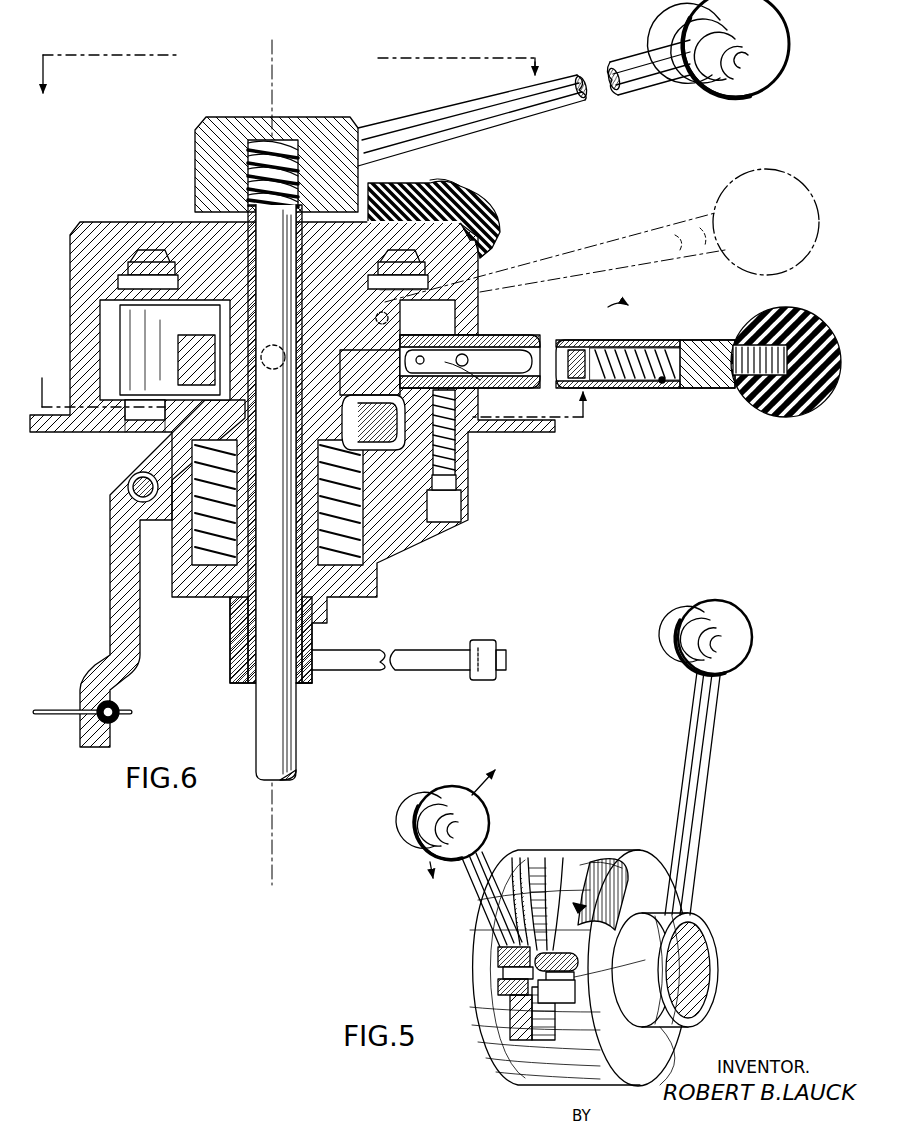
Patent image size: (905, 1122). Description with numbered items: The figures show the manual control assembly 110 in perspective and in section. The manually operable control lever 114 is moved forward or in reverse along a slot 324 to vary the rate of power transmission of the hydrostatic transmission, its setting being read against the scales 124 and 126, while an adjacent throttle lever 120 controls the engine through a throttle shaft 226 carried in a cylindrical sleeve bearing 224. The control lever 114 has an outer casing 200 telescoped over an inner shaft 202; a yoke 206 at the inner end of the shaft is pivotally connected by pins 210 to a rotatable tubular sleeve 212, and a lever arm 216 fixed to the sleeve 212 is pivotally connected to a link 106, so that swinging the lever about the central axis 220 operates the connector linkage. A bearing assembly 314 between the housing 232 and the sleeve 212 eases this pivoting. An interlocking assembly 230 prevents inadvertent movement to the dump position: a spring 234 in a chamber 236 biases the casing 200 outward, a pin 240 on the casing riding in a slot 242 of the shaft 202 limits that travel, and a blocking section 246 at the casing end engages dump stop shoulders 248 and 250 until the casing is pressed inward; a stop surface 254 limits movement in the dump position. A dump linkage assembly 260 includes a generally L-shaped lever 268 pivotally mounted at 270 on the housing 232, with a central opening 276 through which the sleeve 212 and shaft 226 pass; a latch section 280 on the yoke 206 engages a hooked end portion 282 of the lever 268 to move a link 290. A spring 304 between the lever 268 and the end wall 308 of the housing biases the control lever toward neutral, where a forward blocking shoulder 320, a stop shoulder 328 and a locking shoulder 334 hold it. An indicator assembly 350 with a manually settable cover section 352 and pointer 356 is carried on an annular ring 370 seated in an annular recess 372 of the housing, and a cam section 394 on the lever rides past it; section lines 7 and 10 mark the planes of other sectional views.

In FIG. 6, the control mechanism 10 is at (289, 85).
In FIG. 6, the central axis 220 is at (282, 102).
In FIG. 6, the throttle lever 120 is at (570, 60).
In FIG. 5, the throttle lever 120 is at (692, 770).
In FIG. 6, the housing 232 is at (148, 222).
In FIG. 5, the housing 232 is at (700, 922).
In FIG. 6, the annular ring 370 is at (152, 262).
In FIG. 6, the annular recess 372 is at (130, 272).
In FIG. 6, the cylindrical sleeve bearing 224 is at (250, 262).
In FIG. 6, the blocking section 246 is at (400, 300).
In FIG. 5, the blocking section 246 is at (496, 941).
In FIG. 6, the tubular sleeve 212 is at (366, 286).
In FIG. 6, the cover section 352 is at (478, 186).
In FIG. 5, the cover section 352 is at (560, 985).
In FIG. 6, the indicator assembly 350 is at (504, 198).
In FIG. 5, the indicator assembly 350 is at (620, 875).
In FIG. 6, the pointer 356 is at (485, 255).
In FIG. 5, the pointer 356 is at (580, 900).
In FIG. 6, the stop surface 254 is at (498, 278).
In FIG. 5, the stop surface 254 is at (576, 961).
In FIG. 6, the control lever 114 is at (725, 410).
In FIG. 5, the control lever 114 is at (470, 905).
In FIG. 6, the outer casing 200 is at (680, 340).
In FIG. 6, the interlocking assembly 230 is at (641, 297).
In FIG. 6, the yoke 206 is at (210, 340).
In FIG. 6, the pins 210 is at (280, 336).
In FIG. 6, the cam section 394 is at (382, 328).
In FIG. 6, the pin 240 is at (405, 352).
In FIG. 6, the inner shaft 202 is at (590, 340).
In FIG. 6, the hooked end portion 282 is at (370, 372).
In FIG. 6, the slot 242 is at (478, 392).
In FIG. 6, the section line 7 is at (317, 384).
In FIG. 6, the central opening 276 is at (215, 430).
In FIG. 6, the spring 234 is at (625, 388).
In FIG. 6, the chamber 236 is at (663, 385).
In FIG. 6, the latch section 280 is at (352, 420).
In FIG. 6, the pivot mounting 270 is at (143, 474).
In FIG. 6, the spring 304 is at (362, 498).
In FIG. 6, the dump linkage assembly 260 is at (108, 553).
In FIG. 6, the L-shaped lever 268 is at (108, 605).
In FIG. 6, the bearing assembly 314 is at (228, 615).
In FIG. 6, the end wall 308 is at (350, 594).
In FIG. 6, the lever arm 216 is at (418, 648).
In FIG. 6, the link 106 is at (500, 640).
In FIG. 6, the link 290 is at (78, 708).
In FIG. 6, the throttle shaft 226 is at (300, 688).
In FIG. 5, the manual control assembly 110 is at (830, 700).
In FIG. 5, the forward indicia 124 is at (556, 862).
In FIG. 5, the slot 324 is at (526, 862).
In FIG. 5, the stop shoulder 328 is at (501, 958).
In FIG. 5, the neutral position locking shoulder 334 is at (496, 973).
In FIG. 5, the forward blocking shoulder 320 is at (508, 990).
In FIG. 5, the dump stop shoulder 250 is at (570, 946).
In FIG. 5, the dump stop shoulder 248 is at (576, 989).
In FIG. 5, the indicia 126 is at (548, 1042).